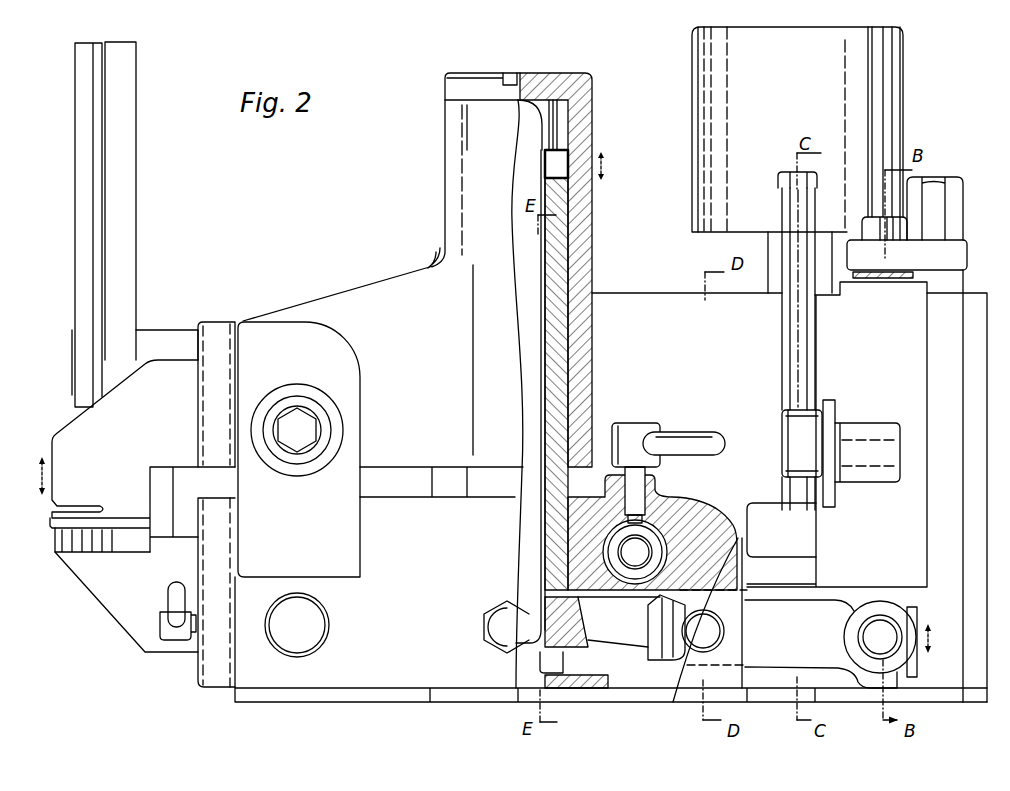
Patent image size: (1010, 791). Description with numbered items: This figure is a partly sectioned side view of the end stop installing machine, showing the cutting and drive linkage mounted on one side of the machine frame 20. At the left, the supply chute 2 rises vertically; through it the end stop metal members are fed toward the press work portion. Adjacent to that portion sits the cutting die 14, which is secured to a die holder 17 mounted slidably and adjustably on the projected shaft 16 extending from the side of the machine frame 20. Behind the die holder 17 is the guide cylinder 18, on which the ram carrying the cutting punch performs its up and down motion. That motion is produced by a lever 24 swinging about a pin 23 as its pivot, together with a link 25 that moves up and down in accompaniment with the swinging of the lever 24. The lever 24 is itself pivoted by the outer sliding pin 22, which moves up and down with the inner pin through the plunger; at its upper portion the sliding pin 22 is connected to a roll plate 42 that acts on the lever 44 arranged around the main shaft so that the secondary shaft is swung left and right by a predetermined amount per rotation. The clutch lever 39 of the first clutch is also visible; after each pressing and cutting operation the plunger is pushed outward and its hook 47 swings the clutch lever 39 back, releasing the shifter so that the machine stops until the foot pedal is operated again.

The supply chute 2 is at (78, 183).
The cutting die 14 is at (366, 291).
The projected shaft 16 is at (316, 621).
The die holder 17 is at (152, 588).
The guide cylinder 18 is at (566, 238).
The machine frame 20 is at (660, 333).
The sliding pin 22 is at (872, 276).
The pin 23 is at (716, 628).
The lever 24 is at (622, 635).
The link 25 is at (520, 168).
The clutch lever 39 is at (791, 333).
The roll plate 42 is at (932, 270).
The lever 44 is at (956, 184).
The hook 47 is at (870, 426).